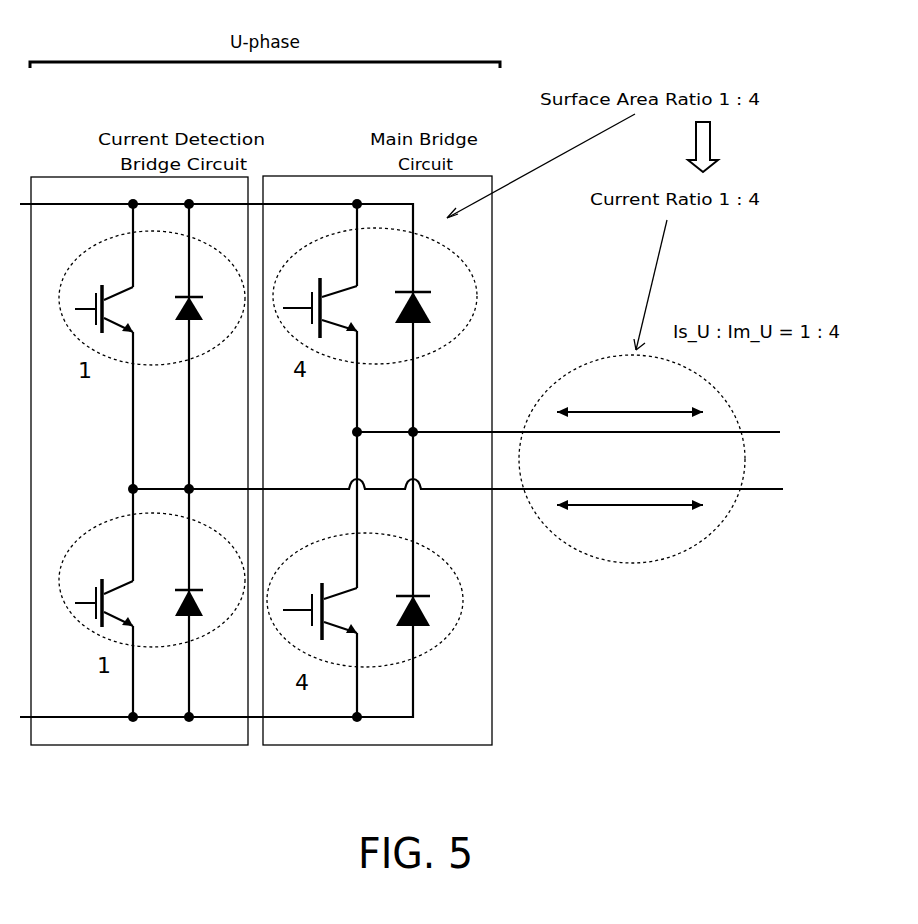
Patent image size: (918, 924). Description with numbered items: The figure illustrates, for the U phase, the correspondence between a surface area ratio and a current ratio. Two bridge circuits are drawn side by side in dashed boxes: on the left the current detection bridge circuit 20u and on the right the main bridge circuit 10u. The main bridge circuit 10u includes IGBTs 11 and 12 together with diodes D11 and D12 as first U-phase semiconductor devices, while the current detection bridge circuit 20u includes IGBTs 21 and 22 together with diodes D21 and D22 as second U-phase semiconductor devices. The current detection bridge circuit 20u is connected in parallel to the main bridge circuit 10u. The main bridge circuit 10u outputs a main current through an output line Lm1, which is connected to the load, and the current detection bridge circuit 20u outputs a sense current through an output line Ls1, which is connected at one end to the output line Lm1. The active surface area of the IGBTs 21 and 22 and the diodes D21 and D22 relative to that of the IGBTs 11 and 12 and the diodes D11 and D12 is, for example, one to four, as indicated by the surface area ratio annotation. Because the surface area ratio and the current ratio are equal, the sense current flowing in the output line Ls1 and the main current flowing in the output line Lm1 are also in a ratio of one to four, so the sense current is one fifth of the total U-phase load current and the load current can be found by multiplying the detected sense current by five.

The current detection bridge circuit 20u is at (62, 177).
The main bridge circuit 10u is at (283, 176).
The IGBT 21 is at (104, 295).
The diode D21 is at (171, 289).
The IGBT 11 is at (320, 295).
The diode D11 is at (398, 293).
The IGBT 22 is at (104, 589).
The diode D22 is at (171, 588).
The IGBT 12 is at (320, 598).
The diode D12 is at (399, 594).
The output line Lm1 is at (507, 431).
The output line Ls1 is at (510, 489).